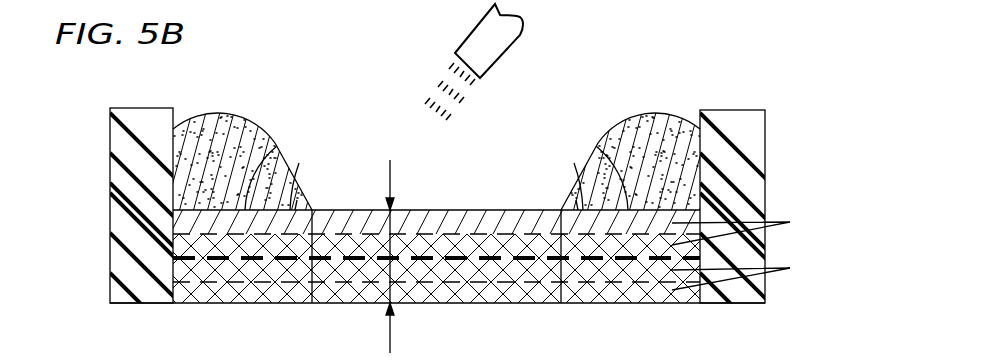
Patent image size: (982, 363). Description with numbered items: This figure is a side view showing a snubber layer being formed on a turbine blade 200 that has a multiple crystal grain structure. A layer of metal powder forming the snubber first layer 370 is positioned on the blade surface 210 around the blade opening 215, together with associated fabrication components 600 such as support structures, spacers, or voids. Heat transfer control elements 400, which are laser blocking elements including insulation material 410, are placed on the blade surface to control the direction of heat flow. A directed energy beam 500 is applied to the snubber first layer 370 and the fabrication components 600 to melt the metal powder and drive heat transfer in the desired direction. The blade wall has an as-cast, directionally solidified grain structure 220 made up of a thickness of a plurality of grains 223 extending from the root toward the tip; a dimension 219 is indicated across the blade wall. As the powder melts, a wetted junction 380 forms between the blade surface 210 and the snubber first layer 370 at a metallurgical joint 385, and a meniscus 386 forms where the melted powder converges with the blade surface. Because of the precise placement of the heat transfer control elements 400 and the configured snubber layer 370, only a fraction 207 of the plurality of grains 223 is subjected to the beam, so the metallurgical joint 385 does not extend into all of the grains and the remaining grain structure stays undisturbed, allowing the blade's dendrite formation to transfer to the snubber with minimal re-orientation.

The turbine blade 200 is at (660, 304).
The fraction of the plurality of grains 207 is at (587, 258).
The blade surface 210 is at (423, 209).
The blade opening 215 is at (498, 304).
The thickness dimension 219 is at (390, 332).
The blade grain structure 220 is at (227, 275).
The plurality of grains 223 is at (751, 248).
The snubber first layer 370 is at (213, 114).
The wetted junction 380 is at (297, 200).
The metallurgical joint 385 is at (277, 146).
The meniscus 386 is at (299, 163).
The heat transfer control elements 400 is at (110, 133).
The insulation material 410 is at (110, 247).
The directed energy beam 500 is at (503, 55).
The fabrication components 600 is at (110, 181).